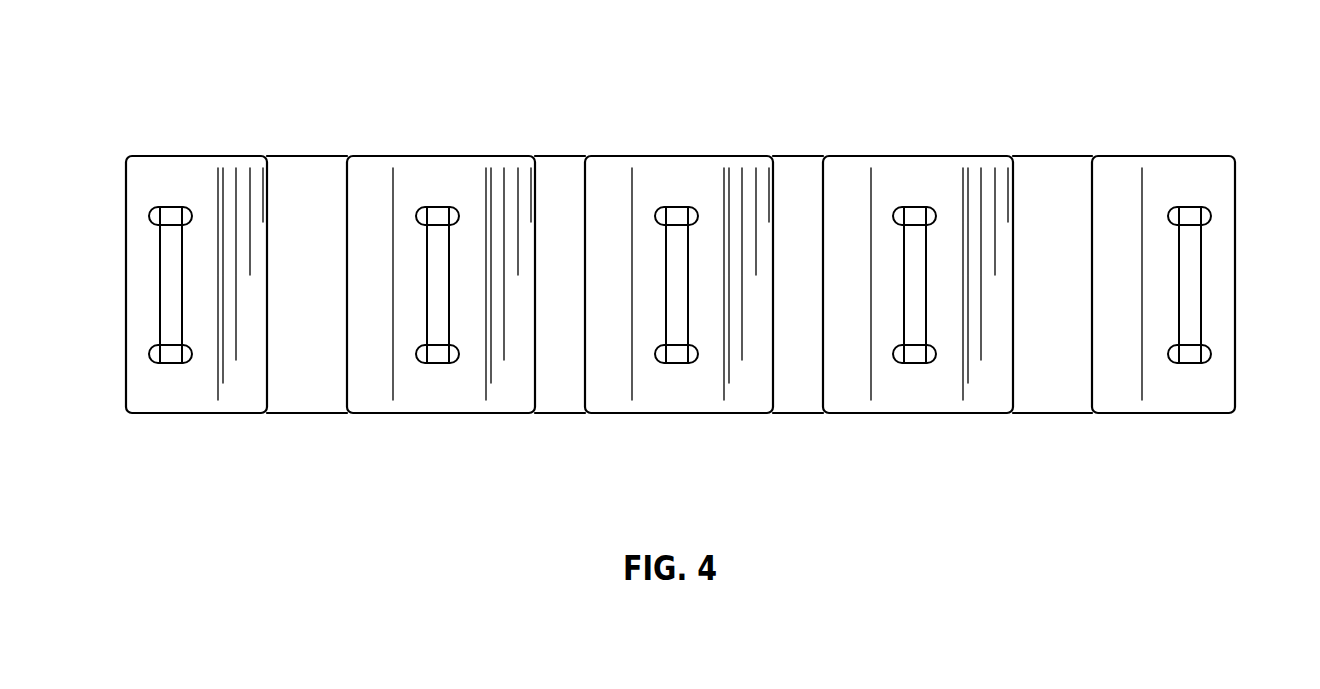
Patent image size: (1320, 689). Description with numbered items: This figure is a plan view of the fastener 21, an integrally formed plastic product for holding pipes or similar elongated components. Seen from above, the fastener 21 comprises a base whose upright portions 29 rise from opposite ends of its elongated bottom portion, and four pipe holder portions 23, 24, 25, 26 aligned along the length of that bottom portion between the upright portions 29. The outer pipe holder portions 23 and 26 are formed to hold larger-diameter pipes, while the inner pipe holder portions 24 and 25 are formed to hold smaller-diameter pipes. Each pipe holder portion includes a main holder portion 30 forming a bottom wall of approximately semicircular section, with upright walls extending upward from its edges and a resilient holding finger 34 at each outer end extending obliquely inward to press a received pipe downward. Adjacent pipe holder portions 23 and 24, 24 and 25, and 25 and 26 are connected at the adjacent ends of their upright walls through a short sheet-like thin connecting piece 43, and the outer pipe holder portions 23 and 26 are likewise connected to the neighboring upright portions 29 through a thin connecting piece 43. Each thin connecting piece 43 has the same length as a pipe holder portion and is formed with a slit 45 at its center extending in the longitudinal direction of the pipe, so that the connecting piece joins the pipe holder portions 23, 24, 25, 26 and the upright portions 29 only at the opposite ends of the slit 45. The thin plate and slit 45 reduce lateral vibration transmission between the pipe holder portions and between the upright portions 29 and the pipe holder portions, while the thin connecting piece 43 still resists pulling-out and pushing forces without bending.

The fastener 21 is at (1190, 80).
The pipe holder portion 23 is at (325, 226).
The pipe holder portion 24 is at (560, 150).
The pipe holder portion 25 is at (802, 150).
The pipe holder portion 26 is at (1040, 150).
The upright portion 29 is at (138, 273).
The main holder portion 30 is at (328, 178).
The resilient holding finger 34 is at (245, 175).
The thin connecting piece 43 is at (688, 322).
The slit 45 is at (167, 323).